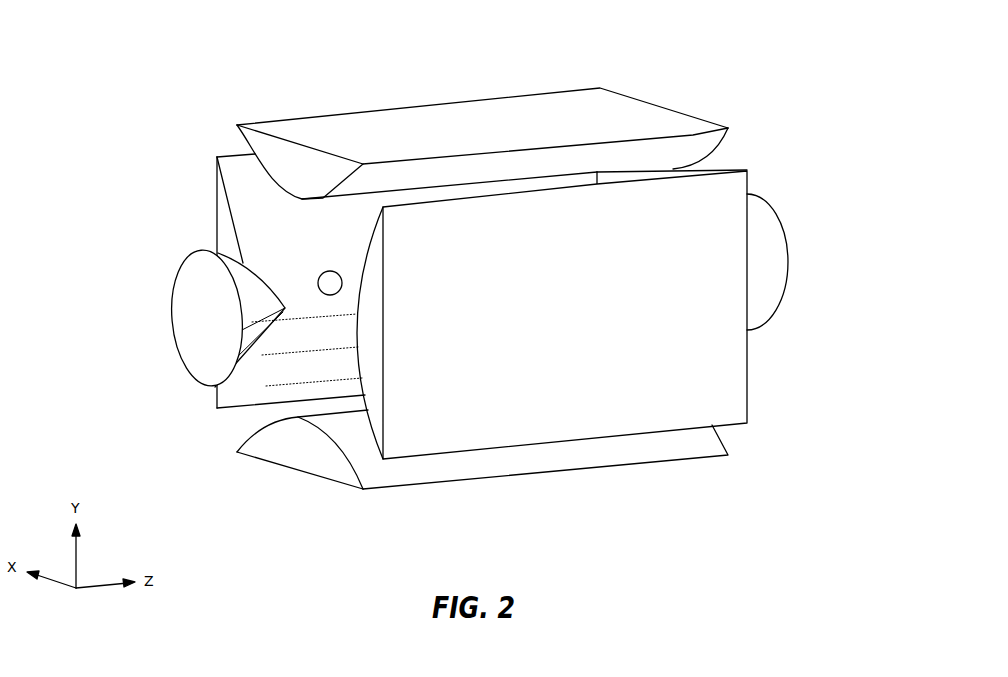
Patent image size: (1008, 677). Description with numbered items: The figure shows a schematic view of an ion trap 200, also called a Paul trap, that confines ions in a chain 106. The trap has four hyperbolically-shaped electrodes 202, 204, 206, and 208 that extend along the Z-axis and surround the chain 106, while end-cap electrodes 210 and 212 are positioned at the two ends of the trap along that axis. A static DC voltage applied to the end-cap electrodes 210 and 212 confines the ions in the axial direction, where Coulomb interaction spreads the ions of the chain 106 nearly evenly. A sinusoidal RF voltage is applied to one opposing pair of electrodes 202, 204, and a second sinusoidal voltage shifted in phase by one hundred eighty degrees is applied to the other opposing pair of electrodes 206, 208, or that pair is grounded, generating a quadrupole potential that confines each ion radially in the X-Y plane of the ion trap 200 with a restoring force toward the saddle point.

The ion trap 200 is at (792, 37).
The hyperbolically-shaped electrode 202 is at (747, 383).
The hyperbolically-shaped electrode 204 is at (217, 212).
The hyperbolically-shaped electrode 206 is at (507, 472).
The hyperbolically-shaped electrode 208 is at (442, 103).
The end-cap electrode 210 is at (172, 299).
The end-cap electrode 212 is at (787, 247).
The chain 106 is at (326, 270).